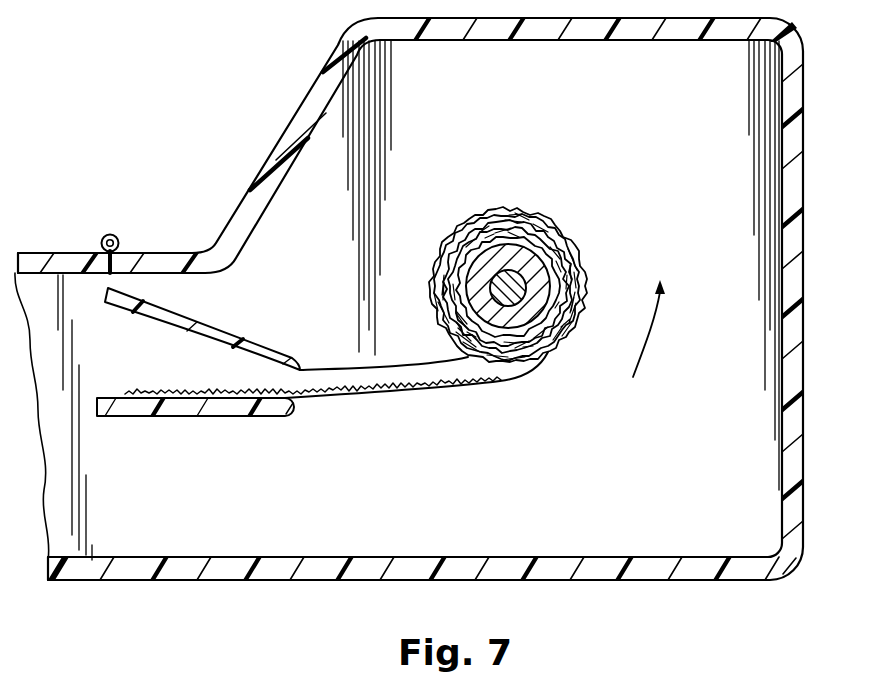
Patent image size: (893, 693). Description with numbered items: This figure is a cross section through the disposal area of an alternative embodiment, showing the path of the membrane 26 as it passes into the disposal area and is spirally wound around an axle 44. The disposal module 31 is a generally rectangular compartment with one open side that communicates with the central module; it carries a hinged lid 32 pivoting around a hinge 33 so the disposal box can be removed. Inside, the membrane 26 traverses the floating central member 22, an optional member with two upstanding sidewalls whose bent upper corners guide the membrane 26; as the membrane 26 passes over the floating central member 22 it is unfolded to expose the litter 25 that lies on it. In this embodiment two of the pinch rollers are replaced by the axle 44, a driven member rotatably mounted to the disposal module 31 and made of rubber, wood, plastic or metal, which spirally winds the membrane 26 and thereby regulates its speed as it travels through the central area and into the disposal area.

The floating central member 22 is at (135, 412).
The litter 25 is at (326, 396).
The membrane 26 is at (396, 395).
The disposal module 31 is at (805, 413).
The hinged lid 32 is at (805, 188).
The hinge 33 is at (110, 233).
The axle 44 is at (558, 333).